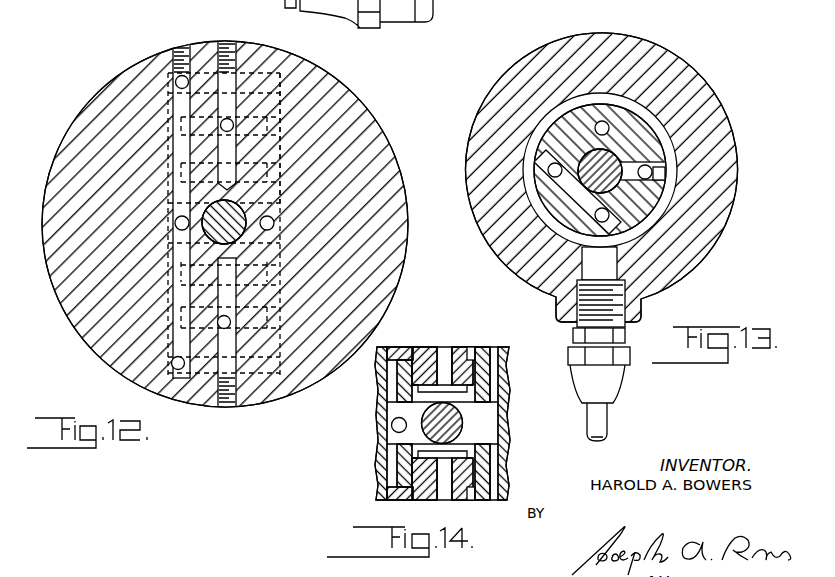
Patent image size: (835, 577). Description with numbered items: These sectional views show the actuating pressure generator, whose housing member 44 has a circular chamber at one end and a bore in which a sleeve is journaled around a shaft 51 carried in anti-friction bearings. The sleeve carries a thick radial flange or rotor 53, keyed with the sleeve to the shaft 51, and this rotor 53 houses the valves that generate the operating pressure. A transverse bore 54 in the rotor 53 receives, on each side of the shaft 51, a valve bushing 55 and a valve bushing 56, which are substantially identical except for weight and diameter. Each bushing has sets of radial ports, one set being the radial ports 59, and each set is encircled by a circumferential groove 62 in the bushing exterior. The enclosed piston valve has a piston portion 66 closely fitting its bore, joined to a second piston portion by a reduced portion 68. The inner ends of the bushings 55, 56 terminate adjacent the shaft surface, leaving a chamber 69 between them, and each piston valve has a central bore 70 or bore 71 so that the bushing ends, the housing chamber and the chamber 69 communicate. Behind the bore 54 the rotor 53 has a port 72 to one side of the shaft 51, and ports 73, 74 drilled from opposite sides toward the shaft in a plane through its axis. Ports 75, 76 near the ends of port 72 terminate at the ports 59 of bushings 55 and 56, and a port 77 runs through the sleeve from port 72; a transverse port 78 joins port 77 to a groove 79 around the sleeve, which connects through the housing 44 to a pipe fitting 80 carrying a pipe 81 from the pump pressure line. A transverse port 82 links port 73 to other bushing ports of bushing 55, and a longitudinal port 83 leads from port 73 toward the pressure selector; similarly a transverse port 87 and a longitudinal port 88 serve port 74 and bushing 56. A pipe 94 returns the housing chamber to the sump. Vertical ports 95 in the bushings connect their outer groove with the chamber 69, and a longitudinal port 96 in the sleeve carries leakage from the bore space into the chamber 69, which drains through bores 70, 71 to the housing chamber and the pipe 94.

In FIG. 13, the housing member 44 is at (690, 87).
In FIG. 12, the shaft 51 is at (240, 207).
In FIG. 13, the shaft 51 is at (612, 166).
In FIG. 14, the shaft 51 is at (455, 433).
In FIG. 12, the rotor 53 is at (352, 100).
In FIG. 14, the rotor 53 is at (378, 450).
In FIG. 12, the transverse bore 54 is at (292, 68).
In FIG. 14, the valve bushing 55 is at (390, 347).
In FIG. 14, the valve bushing 56 is at (387, 505).
In FIG. 14, the radial ports 59 is at (420, 352).
In FIG. 14, the circumferential groove 62 is at (392, 368).
In FIG. 14, the piston portion 66 is at (485, 372).
In FIG. 14, the reduced portion 68 is at (471, 348).
In FIG. 14, the chamber 69 is at (485, 415).
In FIG. 14, the bore 70 is at (447, 350).
In FIG. 14, the bore 71 is at (447, 500).
In FIG. 12, the port 72 is at (177, 105).
In FIG. 12, the port 73 is at (231, 82).
In FIG. 12, the port 74 is at (223, 372).
In FIG. 12, the port 75 is at (176, 80).
In FIG. 12, the port 76 is at (182, 370).
In FIG. 12, the port 77 is at (168, 242).
In FIG. 13, the port 77 is at (660, 154).
In FIG. 13, the transverse port 78 is at (666, 174).
In FIG. 13, the groove 79 is at (662, 213).
In FIG. 13, the pipe fitting 80 is at (620, 337).
In FIG. 13, the pipe 81 is at (603, 421).
In FIG. 12, the transverse port 82 is at (276, 88).
In FIG. 13, the port 83 is at (607, 124).
In FIG. 12, the transverse port 87 is at (230, 324).
In FIG. 13, the port 88 is at (560, 245).
In FIG. 12, the pipe 94 is at (302, 10).
In FIG. 14, the vertical ports 95 is at (501, 390).
In FIG. 12, the port 96 is at (275, 222).
In FIG. 13, the port 96 is at (548, 168).
In FIG. 14, the port 96 is at (391, 425).